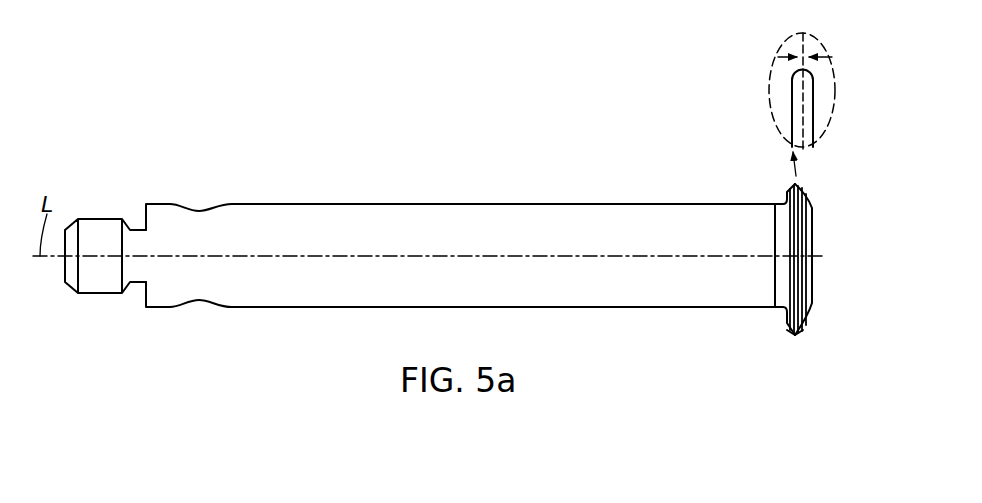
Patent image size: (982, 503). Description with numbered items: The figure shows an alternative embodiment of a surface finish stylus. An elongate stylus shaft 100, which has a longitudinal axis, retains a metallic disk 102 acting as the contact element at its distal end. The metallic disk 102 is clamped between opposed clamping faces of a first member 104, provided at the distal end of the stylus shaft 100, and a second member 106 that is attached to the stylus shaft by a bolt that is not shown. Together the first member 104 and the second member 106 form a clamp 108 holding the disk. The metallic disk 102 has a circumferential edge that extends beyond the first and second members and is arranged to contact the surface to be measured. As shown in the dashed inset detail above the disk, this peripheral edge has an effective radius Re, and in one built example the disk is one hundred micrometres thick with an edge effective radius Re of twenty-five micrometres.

The stylus shaft 100 is at (365, 227).
The metallic disk 102 is at (810, 119).
The first member 104 is at (788, 322).
The second member 106 is at (810, 310).
The clamp 108 is at (778, 362).
The effective radius Re is at (833, 56).